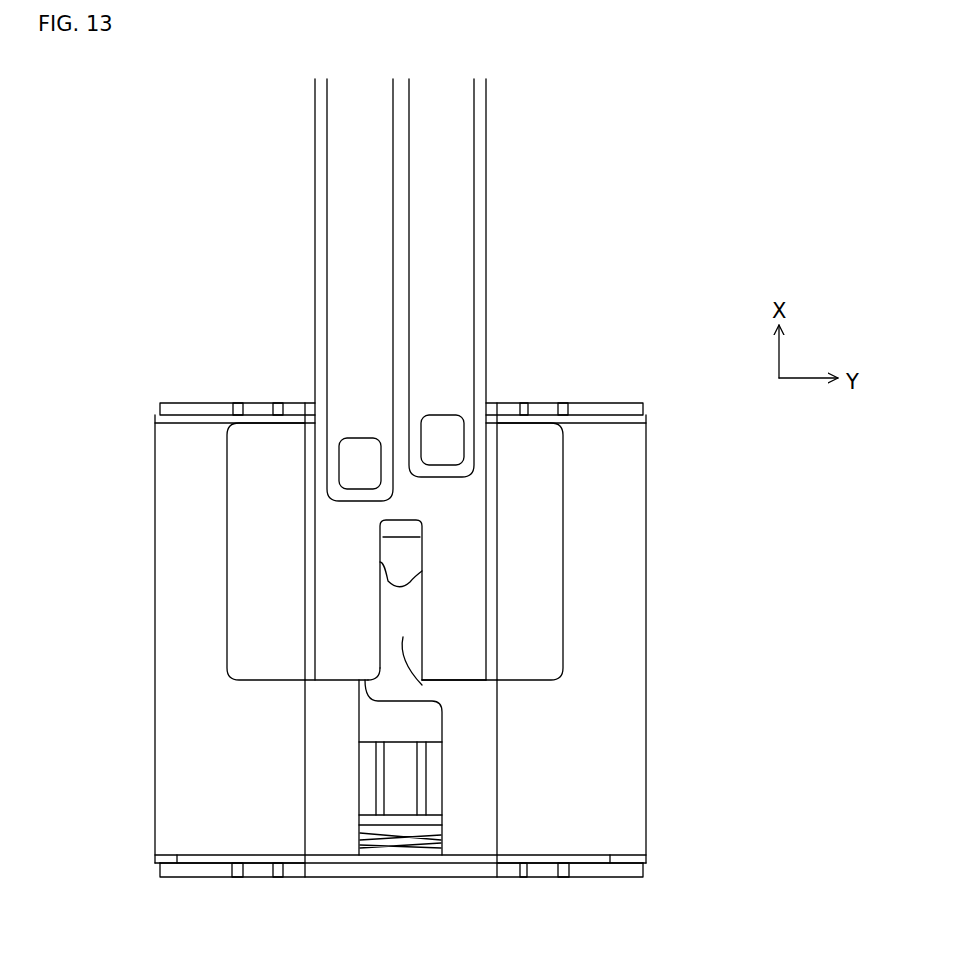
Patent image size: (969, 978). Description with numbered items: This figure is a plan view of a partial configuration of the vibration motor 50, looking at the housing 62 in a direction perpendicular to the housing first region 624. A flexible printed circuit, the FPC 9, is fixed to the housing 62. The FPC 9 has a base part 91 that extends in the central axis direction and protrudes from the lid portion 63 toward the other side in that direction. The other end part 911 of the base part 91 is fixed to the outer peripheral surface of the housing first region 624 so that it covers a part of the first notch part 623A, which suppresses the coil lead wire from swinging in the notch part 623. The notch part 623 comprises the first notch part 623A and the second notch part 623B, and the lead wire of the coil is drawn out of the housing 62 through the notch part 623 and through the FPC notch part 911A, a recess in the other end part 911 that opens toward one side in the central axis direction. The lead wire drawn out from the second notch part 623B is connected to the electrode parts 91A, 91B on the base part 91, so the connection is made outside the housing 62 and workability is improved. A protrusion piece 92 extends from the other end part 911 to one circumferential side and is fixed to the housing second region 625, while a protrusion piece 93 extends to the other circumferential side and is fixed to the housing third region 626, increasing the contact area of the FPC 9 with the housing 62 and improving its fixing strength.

The flexible printed circuit (FPC) 9 is at (499, 94).
The base part 91 is at (487, 168).
The electrode part 91A is at (365, 450).
The electrode part 91B is at (438, 425).
The protrusion piece 92 is at (265, 445).
The protrusion piece 93 is at (527, 435).
The vibration motor 50 is at (624, 313).
The housing 62 is at (634, 713).
The lid portion 63 is at (608, 398).
The notch part 623 is at (604, 594).
The first notch part 623A is at (401, 557).
The second notch part 623B is at (415, 572).
The other end part 911 is at (468, 652).
The FPC notch part 911A is at (422, 685).
The housing first region 624 is at (467, 838).
The housing second region 625 is at (228, 818).
The housing third region 626 is at (551, 830).